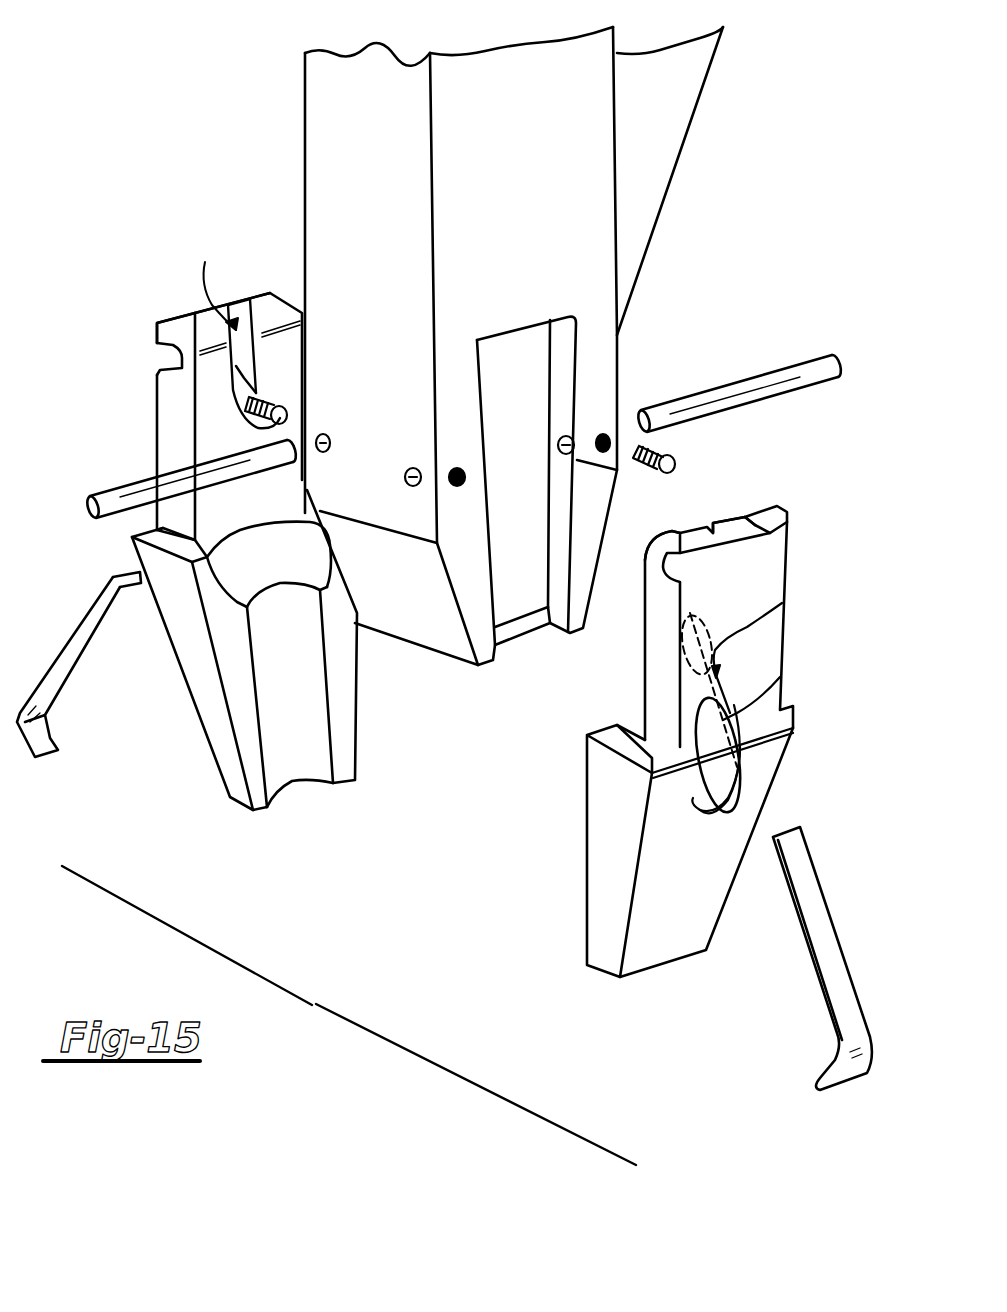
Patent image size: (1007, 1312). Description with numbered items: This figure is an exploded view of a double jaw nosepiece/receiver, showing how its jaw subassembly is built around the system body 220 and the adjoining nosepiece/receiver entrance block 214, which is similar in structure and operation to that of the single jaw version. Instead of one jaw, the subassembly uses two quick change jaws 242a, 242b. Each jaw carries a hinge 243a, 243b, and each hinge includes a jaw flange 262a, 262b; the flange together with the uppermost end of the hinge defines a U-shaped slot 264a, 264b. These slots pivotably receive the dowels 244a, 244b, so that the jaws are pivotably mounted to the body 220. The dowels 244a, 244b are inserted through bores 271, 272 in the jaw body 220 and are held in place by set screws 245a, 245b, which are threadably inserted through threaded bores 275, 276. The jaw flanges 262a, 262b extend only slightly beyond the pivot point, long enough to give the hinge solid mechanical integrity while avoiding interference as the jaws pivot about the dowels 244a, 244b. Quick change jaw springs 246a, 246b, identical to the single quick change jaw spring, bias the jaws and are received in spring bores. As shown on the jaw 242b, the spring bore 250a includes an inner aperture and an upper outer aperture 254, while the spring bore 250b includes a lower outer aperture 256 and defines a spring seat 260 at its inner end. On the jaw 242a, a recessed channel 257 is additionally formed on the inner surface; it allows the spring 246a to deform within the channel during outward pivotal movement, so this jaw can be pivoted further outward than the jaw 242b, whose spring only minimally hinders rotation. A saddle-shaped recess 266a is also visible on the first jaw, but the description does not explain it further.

The nosepiece/receiver entrance block 214 is at (655, 182).
The body 220 is at (332, 200).
The quick change jaw 242a is at (203, 710).
The quick change jaw 242b is at (652, 950).
The hinge 243a is at (156, 415).
The hinge 243b is at (768, 584).
The dowel 244a is at (140, 490).
The dowel 244b is at (776, 366).
The set screw 245a is at (284, 410).
The set screw 245b is at (673, 468).
The quick change jaw spring 246a is at (47, 718).
The quick change jaw spring 246b is at (850, 1098).
The spring bore 250a is at (777, 620).
The spring bore 250b is at (690, 790).
The upper outer aperture 254 is at (776, 702).
The lower outer aperture 256 is at (756, 784).
The recessed channel 257 is at (210, 279).
The spring seat 260 is at (745, 812).
The jaw flange 262a is at (158, 322).
The jaw flange 262b is at (782, 513).
The U-shaped slot 264a is at (160, 357).
The U-shaped slot 264b is at (750, 552).
The saddle 266a is at (298, 757).
The bore 271 is at (322, 440).
The bore 272 is at (407, 476).
The threaded bore 275 is at (460, 470).
The threaded bore 276 is at (606, 436).